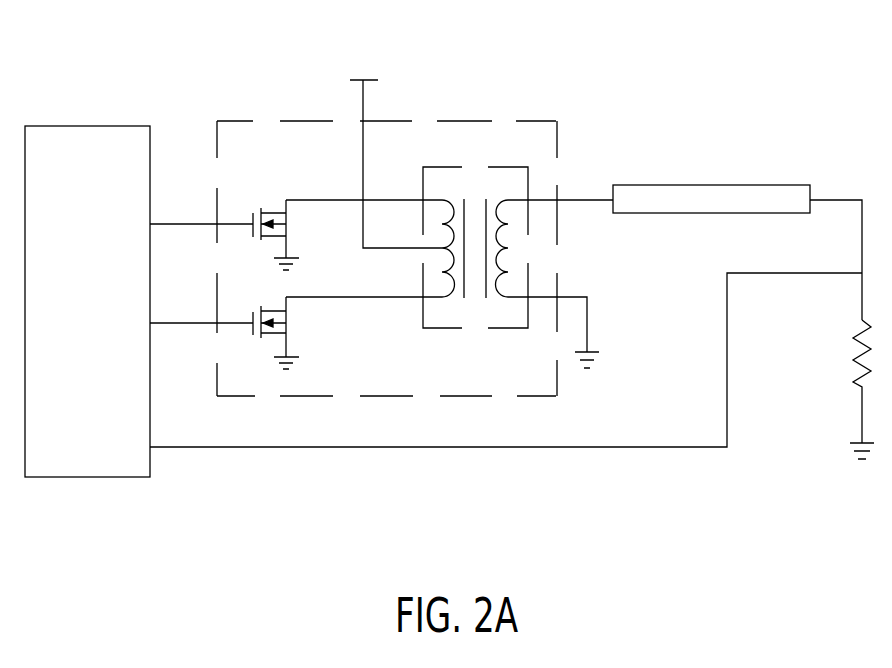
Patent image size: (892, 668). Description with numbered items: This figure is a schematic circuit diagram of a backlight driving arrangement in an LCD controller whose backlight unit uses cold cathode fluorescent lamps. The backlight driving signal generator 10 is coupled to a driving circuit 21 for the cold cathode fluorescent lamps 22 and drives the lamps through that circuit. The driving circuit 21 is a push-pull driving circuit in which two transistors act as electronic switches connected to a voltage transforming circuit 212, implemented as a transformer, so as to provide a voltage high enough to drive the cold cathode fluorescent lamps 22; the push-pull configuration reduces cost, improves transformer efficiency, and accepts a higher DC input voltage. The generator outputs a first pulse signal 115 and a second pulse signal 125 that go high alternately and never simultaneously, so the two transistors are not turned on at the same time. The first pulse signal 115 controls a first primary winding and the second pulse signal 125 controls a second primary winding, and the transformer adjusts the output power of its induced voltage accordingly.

The backlight driving signal generator 10 is at (88, 126).
The first pulse signal 115 is at (181, 222).
The second pulse signal 125 is at (180, 322).
The driving circuit 21 is at (473, 120).
The voltage transforming circuit 212 is at (503, 167).
The cold cathode fluorescent lamps 22 is at (737, 185).